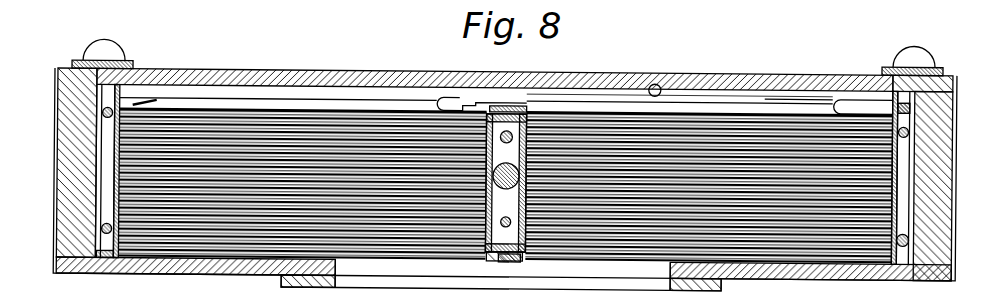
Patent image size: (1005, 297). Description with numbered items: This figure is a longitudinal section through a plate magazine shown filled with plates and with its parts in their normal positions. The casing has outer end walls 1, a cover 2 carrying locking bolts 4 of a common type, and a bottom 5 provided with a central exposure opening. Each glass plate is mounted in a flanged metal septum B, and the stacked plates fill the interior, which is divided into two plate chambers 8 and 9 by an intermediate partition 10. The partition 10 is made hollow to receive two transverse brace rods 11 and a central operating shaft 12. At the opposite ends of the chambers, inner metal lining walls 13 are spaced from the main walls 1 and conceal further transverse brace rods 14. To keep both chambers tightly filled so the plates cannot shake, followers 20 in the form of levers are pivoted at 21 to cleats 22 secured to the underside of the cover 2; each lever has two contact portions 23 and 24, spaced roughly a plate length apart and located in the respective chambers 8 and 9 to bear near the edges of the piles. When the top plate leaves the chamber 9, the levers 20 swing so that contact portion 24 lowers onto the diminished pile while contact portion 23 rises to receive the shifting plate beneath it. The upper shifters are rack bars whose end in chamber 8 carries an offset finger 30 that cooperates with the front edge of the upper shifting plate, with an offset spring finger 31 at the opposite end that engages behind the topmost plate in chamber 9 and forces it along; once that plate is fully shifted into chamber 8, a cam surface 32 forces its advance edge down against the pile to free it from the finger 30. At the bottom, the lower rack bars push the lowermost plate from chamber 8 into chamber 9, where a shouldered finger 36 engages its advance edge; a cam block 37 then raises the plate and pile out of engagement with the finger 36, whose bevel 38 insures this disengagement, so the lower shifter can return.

The outer end wall 1 is at (75, 145).
The cover 2 is at (783, 80).
The locking bolt 4 is at (112, 58).
The bottom 5 is at (832, 268).
The plate chamber 8 is at (357, 100).
The plate chamber 9 is at (780, 93).
The partition 10 is at (540, 119).
The transverse brace rod 11 is at (507, 123).
The central operating shaft 12 is at (530, 129).
The inner metal lining wall 13 is at (110, 130).
The transverse brace rod 14 is at (105, 229).
The follower 20 is at (698, 84).
The pivot 21 is at (655, 79).
The cleat 22 is at (305, 85).
The contact portion 23 is at (453, 97).
The contact portion 24 is at (850, 90).
The offset finger 30 is at (512, 106).
The offset spring finger 31 is at (923, 102).
The cam surface 32 is at (157, 99).
The shouldered finger 36 is at (535, 251).
The cam block 37 is at (880, 265).
The bevel 38 is at (490, 252).
The flanged metal septum B is at (247, 108).